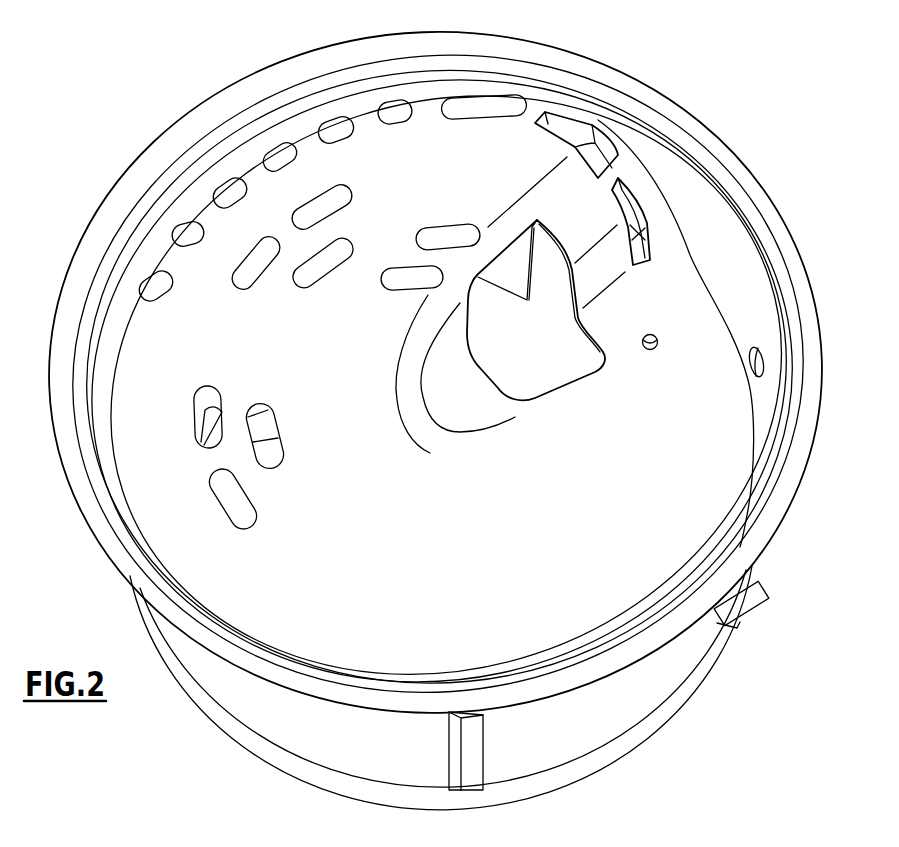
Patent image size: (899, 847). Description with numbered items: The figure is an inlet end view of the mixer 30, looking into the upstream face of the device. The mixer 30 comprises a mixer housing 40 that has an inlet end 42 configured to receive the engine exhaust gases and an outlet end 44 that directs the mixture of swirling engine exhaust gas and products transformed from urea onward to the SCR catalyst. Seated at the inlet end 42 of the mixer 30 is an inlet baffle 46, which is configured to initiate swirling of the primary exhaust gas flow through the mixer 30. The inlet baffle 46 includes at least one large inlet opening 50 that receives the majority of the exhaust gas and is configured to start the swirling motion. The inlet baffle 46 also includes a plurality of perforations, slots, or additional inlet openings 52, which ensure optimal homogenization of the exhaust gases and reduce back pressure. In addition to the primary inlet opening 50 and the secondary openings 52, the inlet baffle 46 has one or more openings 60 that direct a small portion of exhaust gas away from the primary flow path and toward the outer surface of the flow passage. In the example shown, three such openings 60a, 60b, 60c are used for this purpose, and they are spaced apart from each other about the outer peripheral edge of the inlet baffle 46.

The mixer 30 is at (752, 96).
The mixer housing 40 is at (672, 663).
The inlet end 42 is at (703, 541).
The outlet end 44 is at (620, 772).
The inlet baffle 46 is at (703, 457).
The large inlet opening 50 is at (590, 330).
The additional inlet openings 52 is at (197, 403).
The openings 60 is at (530, 78).
The opening 60a is at (465, 110).
The opening 60b is at (578, 137).
The opening 60c is at (643, 238).